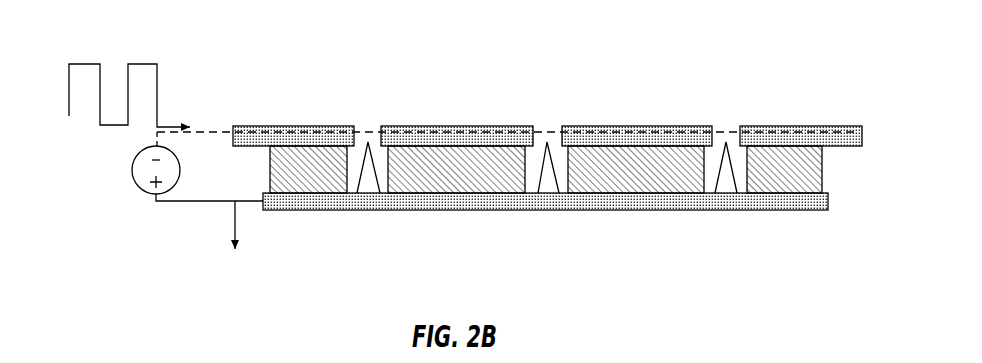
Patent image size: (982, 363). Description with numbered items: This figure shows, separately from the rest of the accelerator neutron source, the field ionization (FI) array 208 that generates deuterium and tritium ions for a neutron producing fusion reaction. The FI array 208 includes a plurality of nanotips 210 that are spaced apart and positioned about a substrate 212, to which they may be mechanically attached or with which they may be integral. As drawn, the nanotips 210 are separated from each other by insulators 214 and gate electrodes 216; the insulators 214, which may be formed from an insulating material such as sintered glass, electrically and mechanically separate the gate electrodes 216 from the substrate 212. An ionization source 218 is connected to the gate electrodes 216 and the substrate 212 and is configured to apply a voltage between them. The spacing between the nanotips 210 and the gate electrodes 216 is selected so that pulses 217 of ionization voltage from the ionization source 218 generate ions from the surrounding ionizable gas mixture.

The field ionization array 208 is at (666, 40).
The nanotips 210 is at (368, 194).
The substrate 212 is at (650, 201).
The insulators 214 is at (455, 180).
The gate electrodes 216 is at (452, 126).
The pulses 217 is at (163, 50).
The ionization source 218 is at (139, 184).